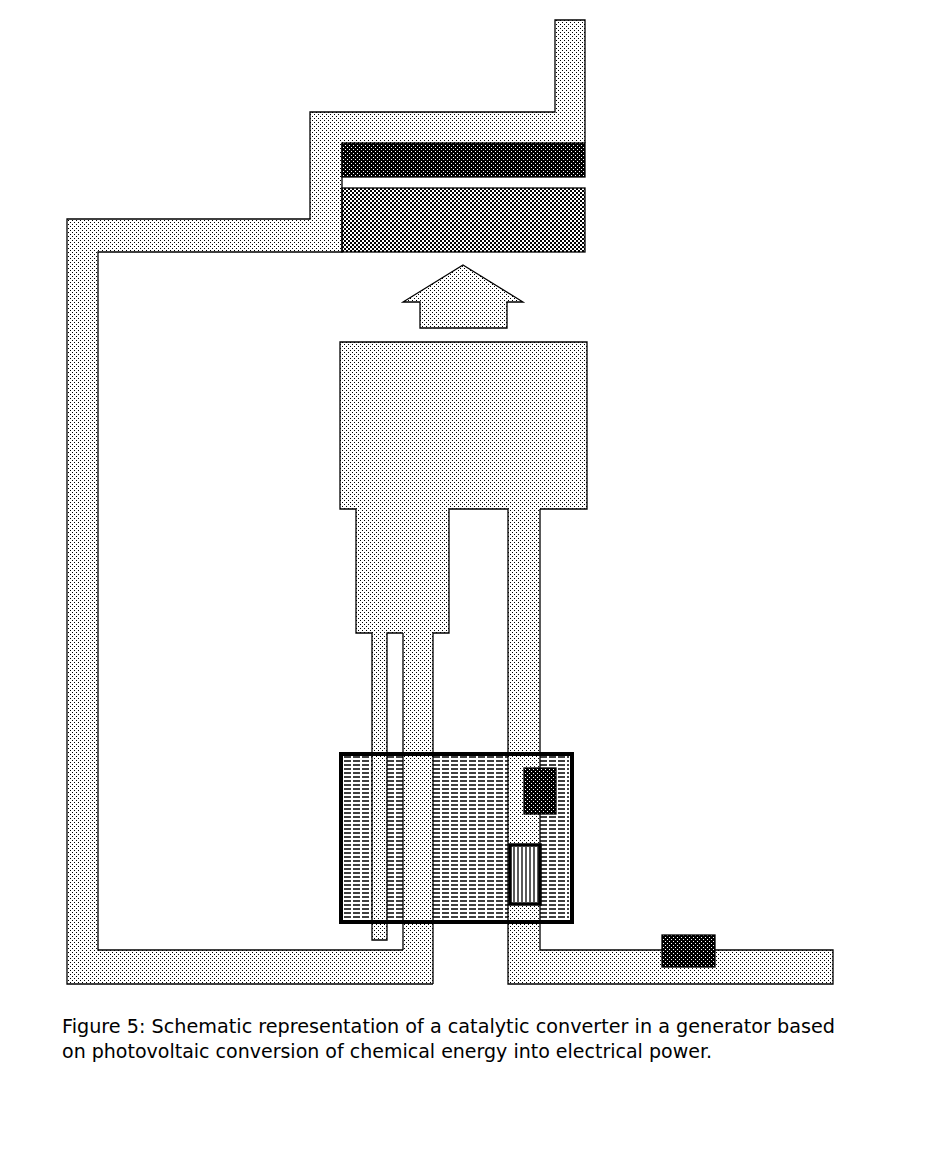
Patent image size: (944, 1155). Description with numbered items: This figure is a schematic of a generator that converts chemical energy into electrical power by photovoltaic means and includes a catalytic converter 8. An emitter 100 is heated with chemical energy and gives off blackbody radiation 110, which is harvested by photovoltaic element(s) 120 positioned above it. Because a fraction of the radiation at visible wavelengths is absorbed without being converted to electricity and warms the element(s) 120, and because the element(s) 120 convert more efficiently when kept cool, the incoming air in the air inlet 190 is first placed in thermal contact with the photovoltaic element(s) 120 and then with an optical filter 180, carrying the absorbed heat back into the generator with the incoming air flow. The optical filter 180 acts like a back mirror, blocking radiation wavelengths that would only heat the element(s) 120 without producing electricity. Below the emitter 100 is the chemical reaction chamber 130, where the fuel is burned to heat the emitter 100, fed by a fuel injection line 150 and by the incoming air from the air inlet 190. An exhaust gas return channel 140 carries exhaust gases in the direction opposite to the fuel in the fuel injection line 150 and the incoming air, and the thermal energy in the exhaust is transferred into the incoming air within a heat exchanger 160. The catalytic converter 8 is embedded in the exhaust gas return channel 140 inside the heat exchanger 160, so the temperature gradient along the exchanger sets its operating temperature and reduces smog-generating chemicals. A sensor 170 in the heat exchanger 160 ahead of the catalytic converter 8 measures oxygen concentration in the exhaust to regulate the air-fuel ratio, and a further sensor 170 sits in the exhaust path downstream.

The catalytic converter 8 is at (525, 875).
The emitter 100 is at (463, 425).
The blackbody radiation 110 is at (463, 312).
The photovoltaic element(s) 120 is at (540, 159).
The chemical reaction chamber 130 is at (293, 746).
The exhaust gas return channel 140 is at (670, 746).
The fuel injection line 150 is at (304, 786).
The heat exchanger 160 is at (388, 838).
The sensor 170 is at (553, 775).
The optical filter 180 is at (563, 220).
The air inlet 190 is at (326, 502).